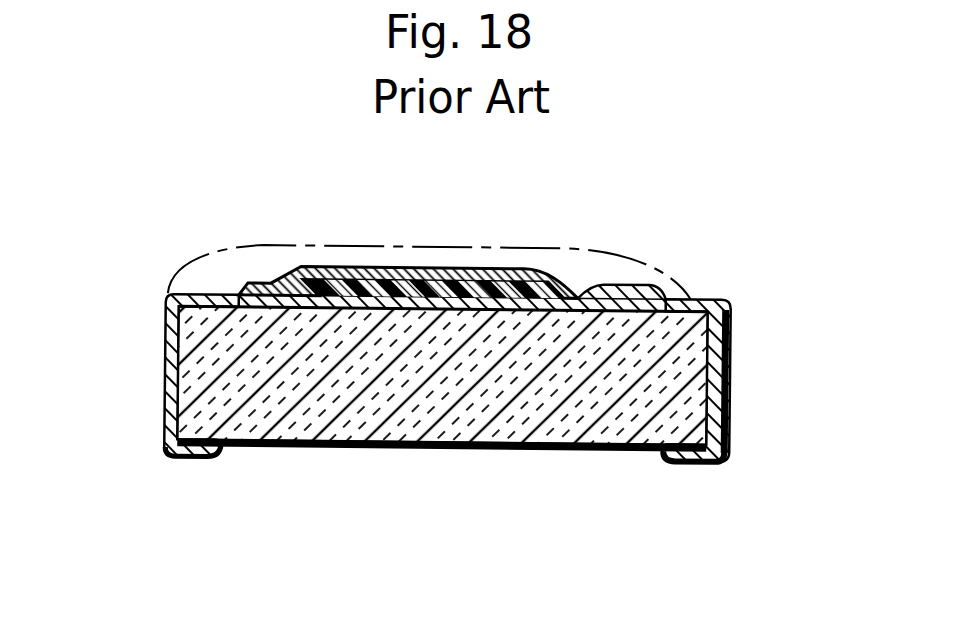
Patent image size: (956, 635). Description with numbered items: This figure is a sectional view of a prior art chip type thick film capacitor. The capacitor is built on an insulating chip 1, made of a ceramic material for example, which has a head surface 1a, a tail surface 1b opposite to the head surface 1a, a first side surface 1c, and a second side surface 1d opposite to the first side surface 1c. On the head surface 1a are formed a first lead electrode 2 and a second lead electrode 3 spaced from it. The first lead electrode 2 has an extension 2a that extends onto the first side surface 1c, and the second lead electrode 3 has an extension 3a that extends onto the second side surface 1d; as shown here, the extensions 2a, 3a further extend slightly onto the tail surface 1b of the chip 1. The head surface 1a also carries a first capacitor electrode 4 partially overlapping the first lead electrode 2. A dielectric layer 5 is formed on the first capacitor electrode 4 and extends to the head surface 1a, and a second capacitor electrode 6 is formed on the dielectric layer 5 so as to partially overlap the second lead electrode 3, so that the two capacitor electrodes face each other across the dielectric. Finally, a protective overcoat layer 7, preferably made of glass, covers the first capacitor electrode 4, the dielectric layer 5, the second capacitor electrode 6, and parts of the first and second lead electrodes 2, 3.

The insulating chip 1 is at (453, 454).
The head surface 1a is at (578, 297).
The tail surface 1b is at (580, 453).
The first side surface 1c is at (732, 333).
The second side surface 1d is at (165, 352).
The first lead electrode 2 is at (693, 298).
The extension of first lead electrode 2a is at (731, 411).
The second lead electrode 3 is at (178, 294).
The extension of second lead electrode 3a is at (165, 393).
The first capacitor electrode 4 is at (515, 310).
The dielectric layer 5 is at (556, 281).
The second capacitor electrode 6 is at (425, 276).
The protective overcoat layer 7 is at (321, 248).